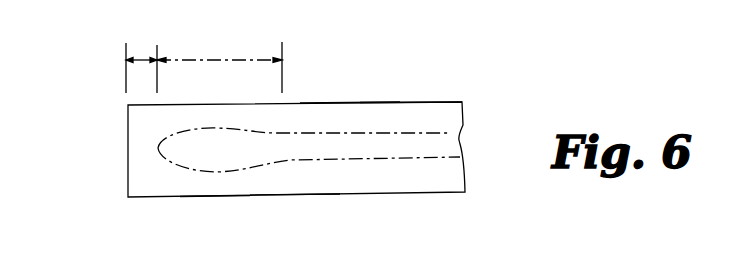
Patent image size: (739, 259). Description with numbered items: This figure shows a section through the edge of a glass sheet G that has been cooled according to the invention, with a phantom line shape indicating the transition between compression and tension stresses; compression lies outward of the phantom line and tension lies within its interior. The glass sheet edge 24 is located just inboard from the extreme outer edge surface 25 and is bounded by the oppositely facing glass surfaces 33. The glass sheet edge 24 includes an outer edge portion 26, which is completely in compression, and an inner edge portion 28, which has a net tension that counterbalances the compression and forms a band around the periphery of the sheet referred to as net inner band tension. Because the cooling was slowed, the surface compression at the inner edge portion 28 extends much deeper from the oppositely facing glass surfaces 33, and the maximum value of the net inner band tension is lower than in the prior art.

The glass sheet edge 24 is at (213, 199).
The extreme outer edge surface 25 is at (128, 142).
The outer edge portion 26 is at (145, 60).
The inner edge portion 28 is at (220, 58).
The oppositely facing glass surfaces 33 is at (380, 101).
The glass sheet G is at (337, 101).